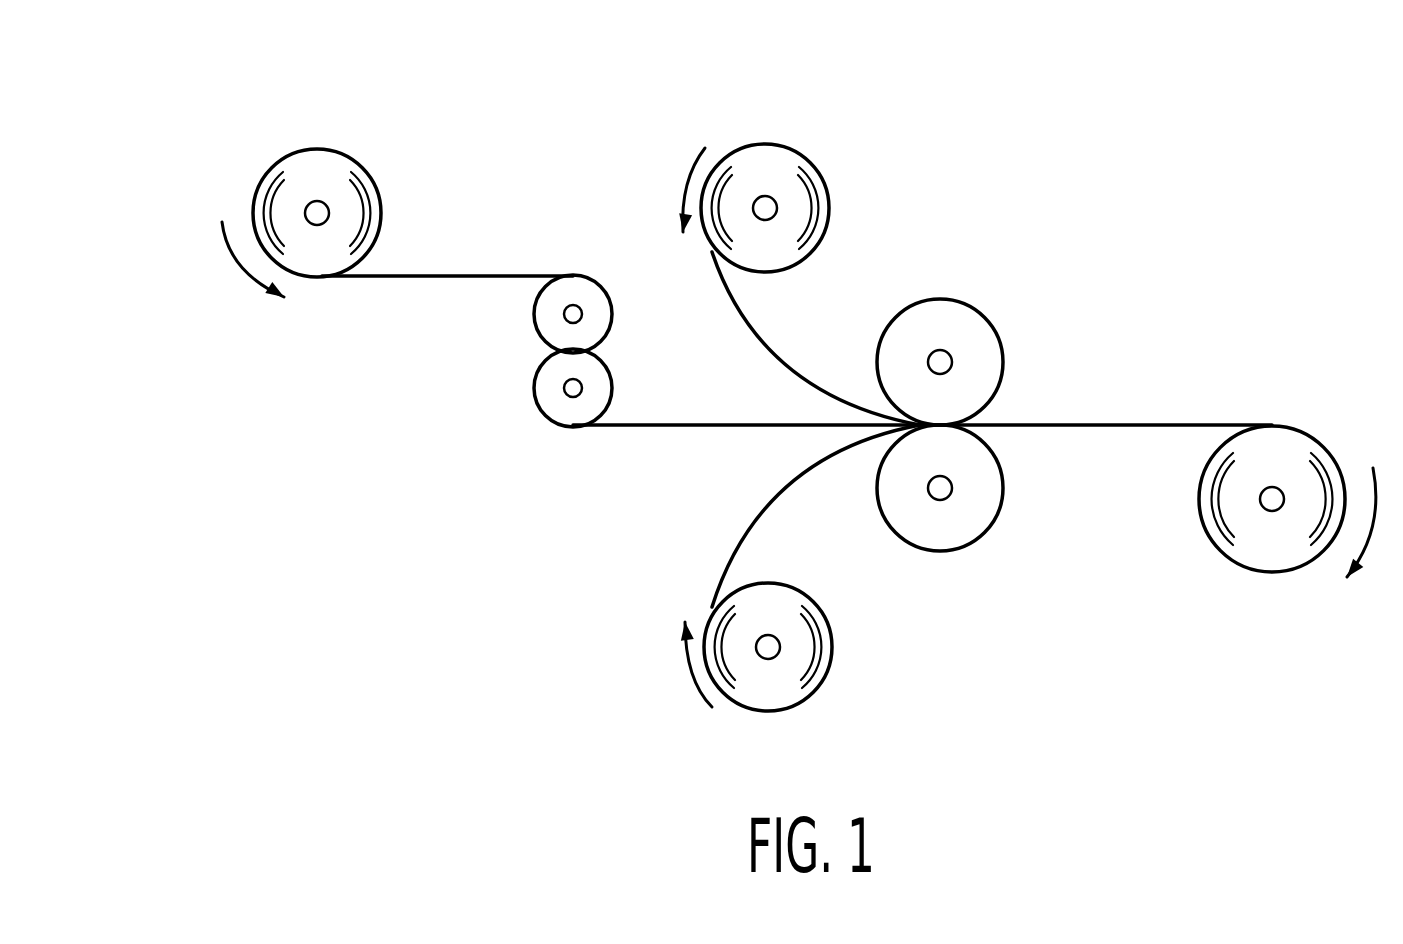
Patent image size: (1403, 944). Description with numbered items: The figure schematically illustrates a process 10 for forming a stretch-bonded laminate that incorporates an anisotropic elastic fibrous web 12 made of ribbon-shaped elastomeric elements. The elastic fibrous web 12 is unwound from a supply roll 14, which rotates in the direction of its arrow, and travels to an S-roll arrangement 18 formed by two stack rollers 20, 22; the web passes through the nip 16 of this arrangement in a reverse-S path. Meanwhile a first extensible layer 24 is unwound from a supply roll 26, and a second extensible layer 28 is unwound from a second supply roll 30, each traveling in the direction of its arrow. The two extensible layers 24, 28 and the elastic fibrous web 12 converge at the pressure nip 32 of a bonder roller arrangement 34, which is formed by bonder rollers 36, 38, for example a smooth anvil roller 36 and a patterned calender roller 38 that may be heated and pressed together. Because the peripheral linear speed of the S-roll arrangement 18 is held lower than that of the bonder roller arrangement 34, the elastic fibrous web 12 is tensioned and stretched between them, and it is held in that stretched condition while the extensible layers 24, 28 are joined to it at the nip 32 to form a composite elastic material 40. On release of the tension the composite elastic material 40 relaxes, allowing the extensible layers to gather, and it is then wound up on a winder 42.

The process for forming a stretch-bonded laminate 10 is at (1125, 118).
The anisotropic elastic fibrous web 12 is at (446, 275).
The supply roll 14 is at (300, 150).
The nip 16 is at (620, 348).
The S-roll arrangement 18 is at (512, 353).
The stack roller 20 is at (601, 288).
The stack roller 22 is at (543, 412).
The first extensible layer 24 is at (758, 306).
The supply roll 26 is at (823, 180).
The second extensible layer 28 is at (804, 490).
The second supply roll 30 is at (823, 687).
The nip 32 is at (863, 380).
The bonder roller arrangement 34 is at (1053, 370).
The bonder roller 36 is at (949, 300).
The bonder roller 38 is at (960, 549).
The composite elastic material 40 is at (1142, 425).
The winder 42 is at (1320, 443).